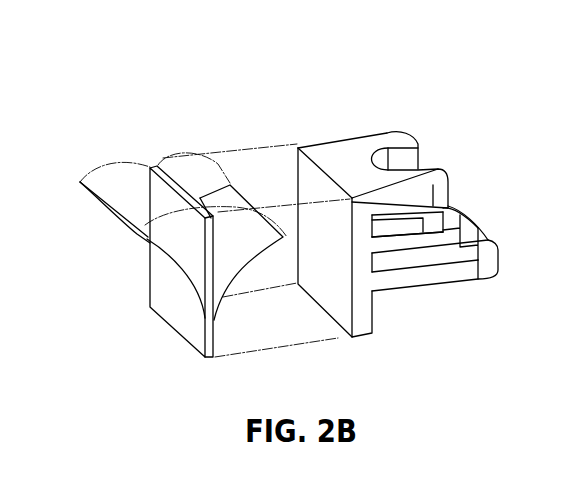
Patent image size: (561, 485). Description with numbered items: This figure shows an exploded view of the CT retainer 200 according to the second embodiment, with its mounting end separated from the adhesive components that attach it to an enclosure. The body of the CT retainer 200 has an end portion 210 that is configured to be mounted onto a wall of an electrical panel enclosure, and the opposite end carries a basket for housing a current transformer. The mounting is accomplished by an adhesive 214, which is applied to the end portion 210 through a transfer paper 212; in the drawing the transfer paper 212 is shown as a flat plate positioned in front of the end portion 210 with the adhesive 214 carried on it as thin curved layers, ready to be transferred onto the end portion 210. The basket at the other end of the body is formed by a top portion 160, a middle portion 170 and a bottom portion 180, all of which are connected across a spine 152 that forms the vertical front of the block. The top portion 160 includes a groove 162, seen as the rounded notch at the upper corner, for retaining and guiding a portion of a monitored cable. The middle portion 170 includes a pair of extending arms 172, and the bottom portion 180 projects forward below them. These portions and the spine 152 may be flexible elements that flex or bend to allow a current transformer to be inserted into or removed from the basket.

The CT retainer 200 is at (460, 105).
The top portion 160 is at (341, 141).
The groove 162 is at (440, 149).
The middle portion 170 is at (405, 240).
The extending arms 172 is at (418, 243).
The bottom portion 180 is at (465, 296).
The spine 152 is at (362, 305).
The end portion 210 is at (336, 324).
The transfer paper 212 is at (170, 320).
The adhesive 214 is at (157, 172).